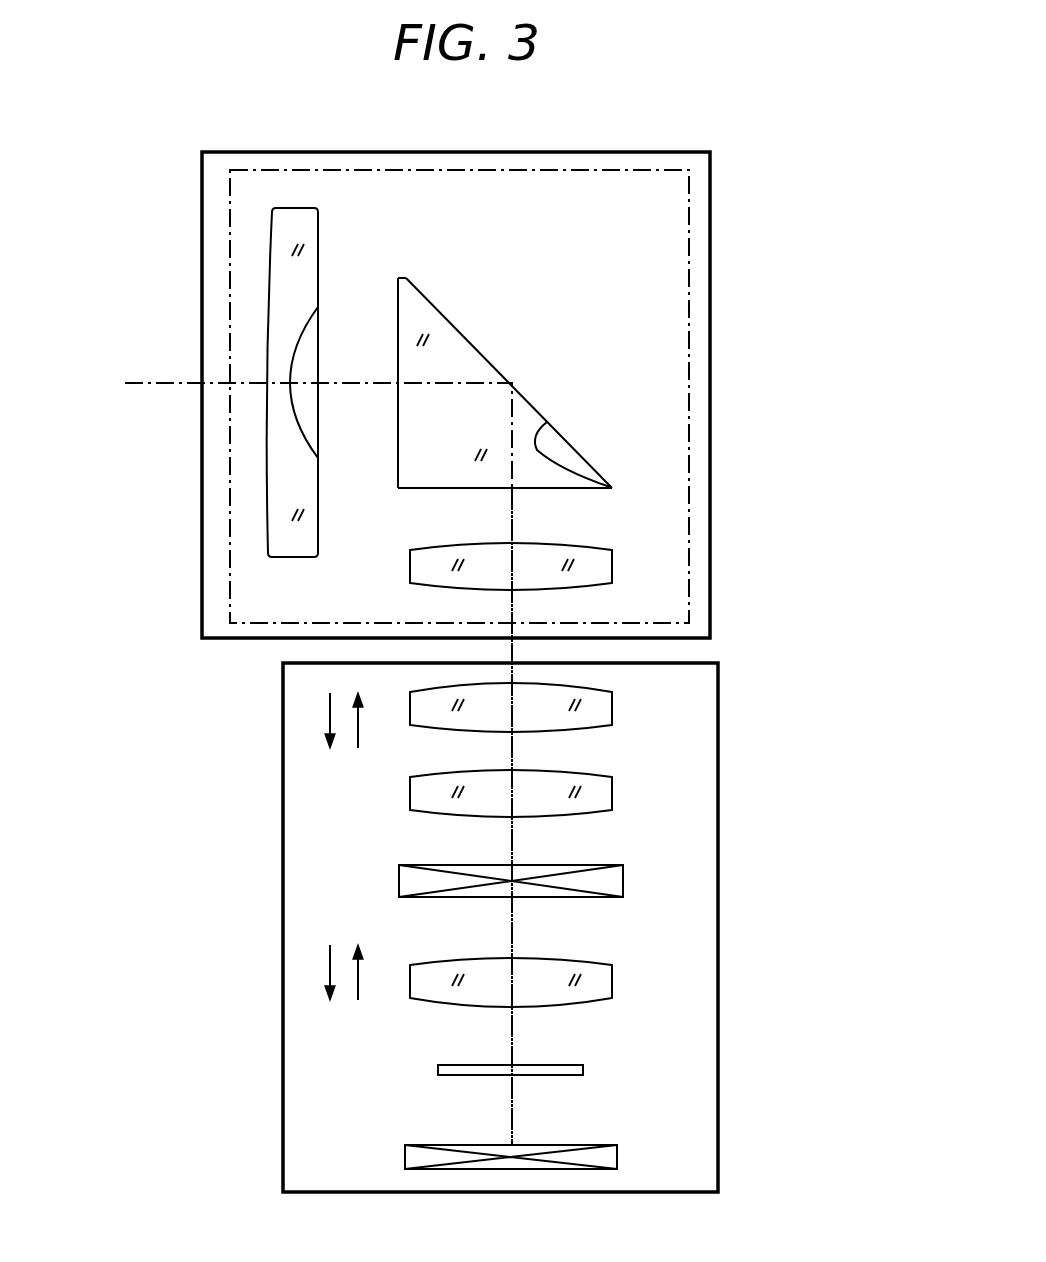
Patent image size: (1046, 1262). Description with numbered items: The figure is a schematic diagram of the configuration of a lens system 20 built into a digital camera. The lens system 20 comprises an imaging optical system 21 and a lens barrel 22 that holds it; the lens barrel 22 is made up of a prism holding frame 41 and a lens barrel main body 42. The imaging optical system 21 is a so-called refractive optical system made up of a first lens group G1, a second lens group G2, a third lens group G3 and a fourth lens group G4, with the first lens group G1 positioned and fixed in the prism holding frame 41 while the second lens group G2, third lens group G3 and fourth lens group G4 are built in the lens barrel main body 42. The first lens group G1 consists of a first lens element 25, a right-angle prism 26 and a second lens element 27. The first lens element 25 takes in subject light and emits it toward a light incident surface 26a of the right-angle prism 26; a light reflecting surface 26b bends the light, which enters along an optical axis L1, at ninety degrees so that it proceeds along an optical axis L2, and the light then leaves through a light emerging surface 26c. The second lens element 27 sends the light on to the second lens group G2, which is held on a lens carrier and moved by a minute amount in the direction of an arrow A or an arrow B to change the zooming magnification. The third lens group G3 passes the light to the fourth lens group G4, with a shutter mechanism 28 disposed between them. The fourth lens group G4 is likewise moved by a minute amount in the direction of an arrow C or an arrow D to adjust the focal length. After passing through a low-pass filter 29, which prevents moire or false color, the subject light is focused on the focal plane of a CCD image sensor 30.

The lens system 20 is at (131, 937).
The imaging optical system 21 is at (836, 427).
The lens barrel 22 is at (115, 593).
The first lens element 25 is at (310, 228).
The right-angle prism 26 is at (486, 354).
The light incident surface 26a is at (397, 307).
The light reflecting surface 26b is at (587, 487).
The light emerging surface 26c is at (427, 488).
The second lens element 27 is at (410, 570).
The shutter mechanism 28 is at (407, 876).
The low-pass filter 29 is at (583, 1068).
The CCD image sensor 30 is at (617, 1150).
The prism holding frame 41 is at (202, 587).
The lens barrel main body 42 is at (283, 692).
The first lens group G1 is at (687, 450).
The second lens group G2 is at (613, 708).
The third lens group G3 is at (613, 793).
The fourth lens group G4 is at (613, 980).
The optical axis L1 is at (187, 383).
The optical axis L2 is at (510, 830).
The arrow A is at (320, 718).
The arrow B is at (370, 724).
The arrow C is at (319, 970).
The arrow D is at (370, 975).